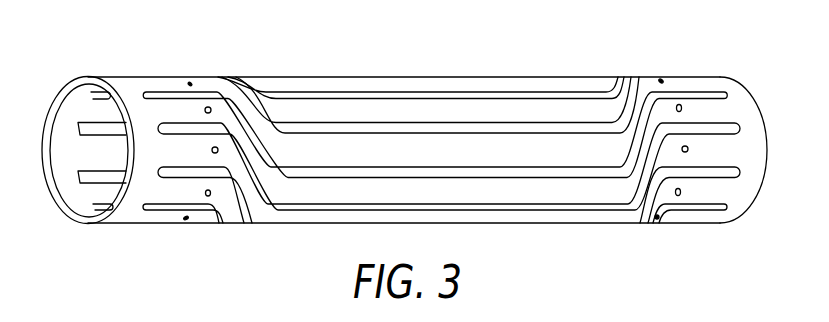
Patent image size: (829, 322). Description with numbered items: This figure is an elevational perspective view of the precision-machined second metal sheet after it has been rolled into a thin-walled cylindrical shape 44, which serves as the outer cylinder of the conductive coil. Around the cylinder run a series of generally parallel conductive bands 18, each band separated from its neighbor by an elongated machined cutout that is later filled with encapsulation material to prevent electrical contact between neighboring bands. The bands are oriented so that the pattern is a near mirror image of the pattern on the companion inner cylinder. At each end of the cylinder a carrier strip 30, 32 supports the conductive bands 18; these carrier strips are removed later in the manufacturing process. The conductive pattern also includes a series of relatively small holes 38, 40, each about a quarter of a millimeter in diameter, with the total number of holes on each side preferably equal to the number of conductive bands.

The conductive bands 18 is at (328, 103).
The carrier strip 30 is at (118, 223).
The carrier strip 32 is at (727, 218).
The holes 38 is at (682, 149).
The holes 40 is at (218, 152).
The thin-walled cylindrical shape 44 is at (565, 41).